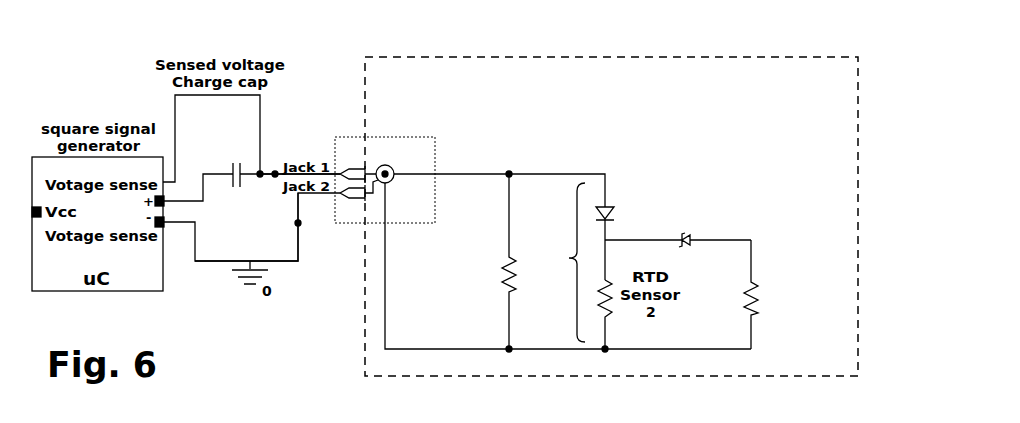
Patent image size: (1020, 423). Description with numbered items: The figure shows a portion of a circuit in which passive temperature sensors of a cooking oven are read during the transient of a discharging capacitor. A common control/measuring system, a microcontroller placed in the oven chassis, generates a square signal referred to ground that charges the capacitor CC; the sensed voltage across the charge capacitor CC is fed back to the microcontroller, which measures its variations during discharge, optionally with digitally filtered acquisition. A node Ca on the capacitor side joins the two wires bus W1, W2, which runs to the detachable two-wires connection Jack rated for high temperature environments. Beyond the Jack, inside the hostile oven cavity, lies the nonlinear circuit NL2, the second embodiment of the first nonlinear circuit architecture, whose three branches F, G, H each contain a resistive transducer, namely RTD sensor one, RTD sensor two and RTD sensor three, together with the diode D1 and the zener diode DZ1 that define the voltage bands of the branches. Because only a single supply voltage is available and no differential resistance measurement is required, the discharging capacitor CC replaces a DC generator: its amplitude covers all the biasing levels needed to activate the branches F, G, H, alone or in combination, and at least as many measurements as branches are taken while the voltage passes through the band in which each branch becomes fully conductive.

The capacitor CC is at (211, 170).
The capacitor node Ca is at (300, 156).
The two wires bus wire W1 is at (276, 173).
The two wires bus wire W2 is at (300, 224).
The detachable two-wires connection Jack is at (417, 131).
The second embodiment of the first nonlinear circuit architecture NL2 is at (809, 54).
The branch of the nonlinear circuit F is at (500, 219).
The branch of the nonlinear circuit G is at (566, 251).
The branch of the nonlinear circuit H is at (741, 238).
The diode D1 is at (622, 243).
The zener diode DZ1 is at (678, 230).